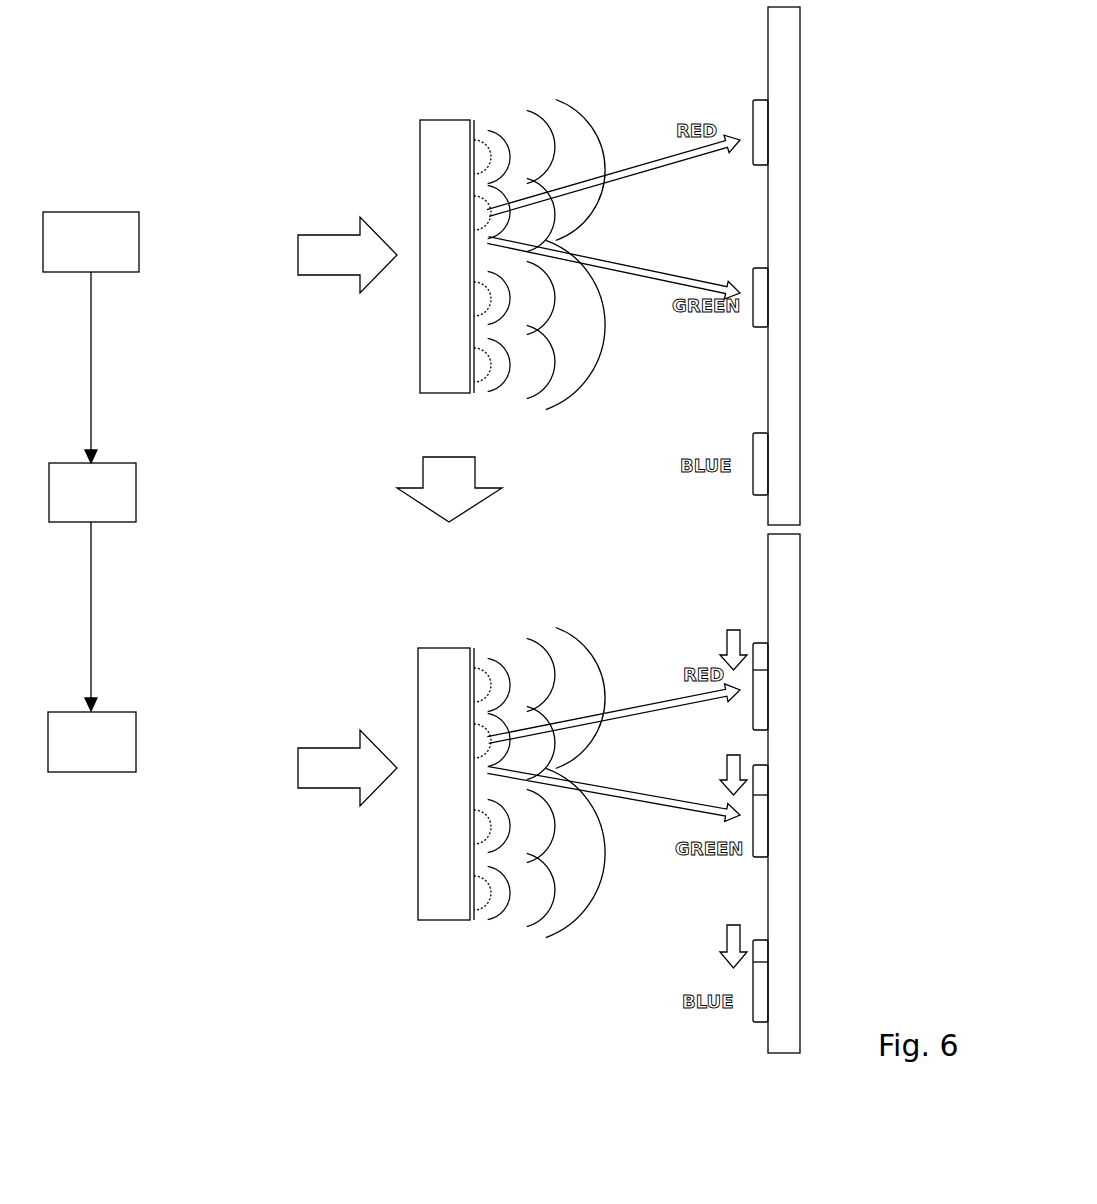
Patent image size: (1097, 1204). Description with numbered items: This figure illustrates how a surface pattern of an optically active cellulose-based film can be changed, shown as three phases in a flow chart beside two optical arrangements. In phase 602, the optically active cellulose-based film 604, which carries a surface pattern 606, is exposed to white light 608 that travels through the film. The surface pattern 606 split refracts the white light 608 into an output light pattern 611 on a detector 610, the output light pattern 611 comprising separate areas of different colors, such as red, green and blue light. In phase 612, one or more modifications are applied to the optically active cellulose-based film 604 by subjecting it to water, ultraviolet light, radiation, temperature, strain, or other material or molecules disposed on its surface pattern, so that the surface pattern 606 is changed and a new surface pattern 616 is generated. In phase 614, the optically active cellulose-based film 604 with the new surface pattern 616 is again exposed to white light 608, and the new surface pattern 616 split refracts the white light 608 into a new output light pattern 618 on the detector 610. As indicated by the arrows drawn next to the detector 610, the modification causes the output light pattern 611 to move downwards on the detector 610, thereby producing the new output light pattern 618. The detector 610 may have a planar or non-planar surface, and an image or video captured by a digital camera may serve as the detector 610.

The phase 602 is at (91, 242).
The optically active cellulose-based film 604 is at (431, 523).
The surface pattern 606 is at (473, 143).
The white light 608 is at (318, 259).
The detector 610 is at (776, 530).
The output light pattern 611 is at (758, 153).
The phase 612 is at (92, 492).
The phase 614 is at (92, 742).
The new surface pattern 616 is at (473, 667).
The new output light pattern 618 is at (766, 682).